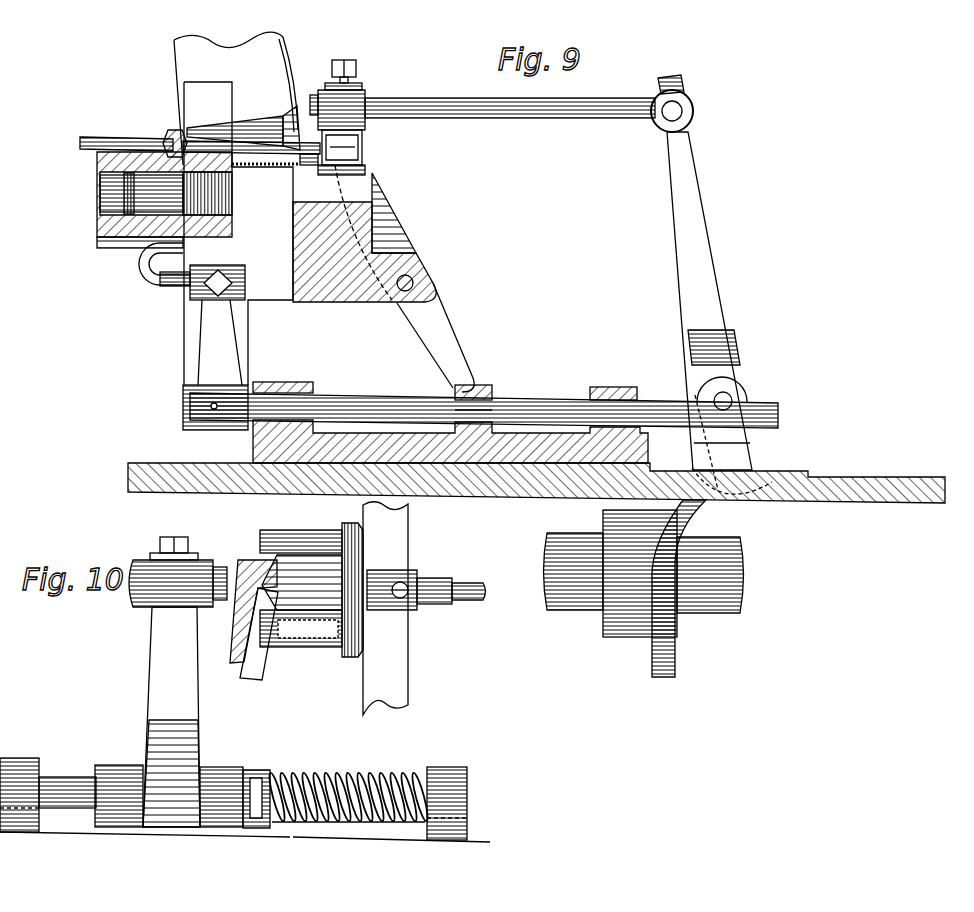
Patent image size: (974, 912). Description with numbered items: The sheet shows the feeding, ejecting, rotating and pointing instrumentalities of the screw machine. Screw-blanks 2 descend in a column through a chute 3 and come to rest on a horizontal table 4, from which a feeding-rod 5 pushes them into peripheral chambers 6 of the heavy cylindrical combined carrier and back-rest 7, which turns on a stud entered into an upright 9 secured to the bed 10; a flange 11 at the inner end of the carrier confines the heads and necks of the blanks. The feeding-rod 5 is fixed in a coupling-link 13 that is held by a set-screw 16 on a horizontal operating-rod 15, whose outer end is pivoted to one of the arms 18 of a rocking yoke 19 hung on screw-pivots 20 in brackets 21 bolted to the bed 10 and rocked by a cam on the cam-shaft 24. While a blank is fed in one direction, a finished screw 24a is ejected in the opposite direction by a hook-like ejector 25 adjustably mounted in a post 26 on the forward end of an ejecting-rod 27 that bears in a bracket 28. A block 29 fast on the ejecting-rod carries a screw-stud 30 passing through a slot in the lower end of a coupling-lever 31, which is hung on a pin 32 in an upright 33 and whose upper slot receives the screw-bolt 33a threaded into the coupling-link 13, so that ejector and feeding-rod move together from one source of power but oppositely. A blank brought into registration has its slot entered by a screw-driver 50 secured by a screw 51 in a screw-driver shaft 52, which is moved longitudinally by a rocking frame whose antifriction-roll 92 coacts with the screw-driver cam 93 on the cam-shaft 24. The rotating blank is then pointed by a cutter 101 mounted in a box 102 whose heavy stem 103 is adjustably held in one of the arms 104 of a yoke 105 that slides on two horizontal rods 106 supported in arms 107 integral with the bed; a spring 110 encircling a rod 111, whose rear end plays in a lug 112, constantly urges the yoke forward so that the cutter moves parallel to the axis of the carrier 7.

In FIG. 9, the screw-blanks 2 is at (113, 139).
In FIG. 10, the screw-blanks 2 is at (270, 530).
In FIG. 9, the chute 3 is at (288, 71).
In FIG. 9, the horizontal table 4 is at (272, 168).
In FIG. 9, the feeding-rod 5 is at (308, 158).
In FIG. 9, the peripheral chambers 6 is at (98, 242).
In FIG. 9, the combined carrier and back-rest 7 is at (96, 160).
In FIG. 10, the combined carrier and back-rest 7 is at (323, 540).
In FIG. 10, the upright 9 is at (385, 608).
In FIG. 9, the bed 10 is at (866, 483).
In FIG. 9, the flange 11 is at (170, 130).
In FIG. 10, the flange 11 is at (350, 530).
In FIG. 9, the coupling-link 13 is at (366, 133).
In FIG. 9, the operating-rod 15 is at (510, 98).
In FIG. 9, the set-screw 16 is at (343, 64).
In FIG. 9, the arms 18 is at (688, 173).
In FIG. 9, the rocking yoke 19 is at (748, 370).
In FIG. 9, the screw-pivots 20 is at (737, 396).
In FIG. 9, the brackets 21 is at (753, 446).
In FIG. 9, the cam-shaft 24 is at (653, 573).
In FIG. 10, the finished screw 24a is at (320, 650).
In FIG. 9, the hook-like ejector 25 is at (137, 270).
In FIG. 9, the post 26 is at (202, 325).
In FIG. 9, the ejecting-rod 27 is at (330, 402).
In FIG. 9, the bracket 28 is at (395, 444).
In FIG. 9, the block 29 is at (496, 390).
In FIG. 9, the screw-stud 30 is at (485, 409).
In FIG. 9, the coupling-lever 31 is at (448, 328).
In FIG. 9, the pin 32 is at (413, 283).
In FIG. 9, the upright 33 is at (325, 301).
In FIG. 9, the screw-bolt 33a is at (367, 148).
In FIG. 10, the screw-driver 50 is at (392, 599).
In FIG. 10, the screw 51 is at (421, 580).
In FIG. 10, the screw-driver shaft 52 is at (458, 584).
In FIG. 9, the antifriction-roll 92 is at (760, 480).
In FIG. 9, the screw-driver cam 93 is at (690, 529).
In FIG. 10, the cutter 101 is at (248, 676).
In FIG. 10, the box 102 is at (246, 560).
In FIG. 10, the stem 103 is at (218, 568).
In FIG. 10, the arms 104 is at (171, 682).
In FIG. 10, the yoke 105 is at (133, 774).
In FIG. 10, the rods 106 is at (65, 786).
In FIG. 10, the arms 107 is at (15, 767).
In FIG. 10, the spring 110 is at (314, 779).
In FIG. 10, the rod 111 is at (357, 784).
In FIG. 10, the lug 112 is at (445, 775).